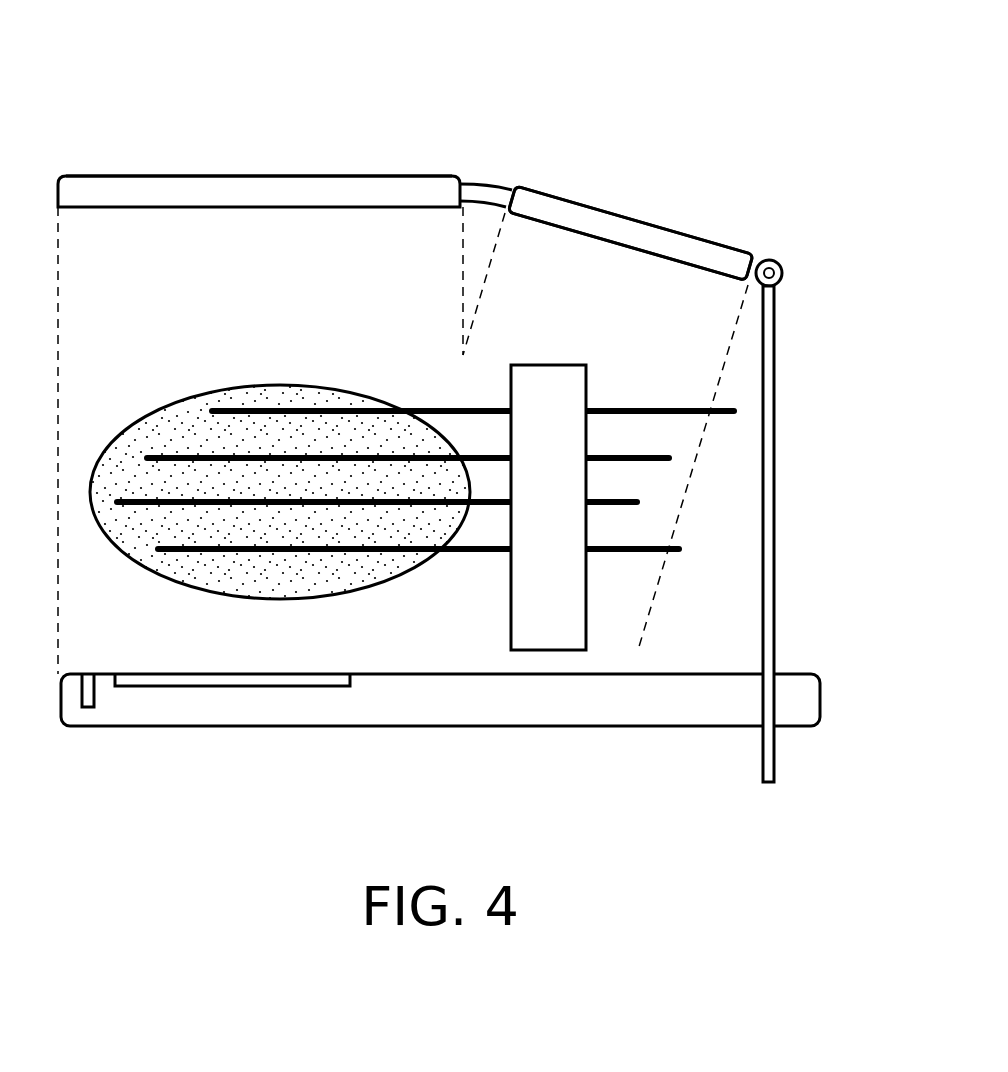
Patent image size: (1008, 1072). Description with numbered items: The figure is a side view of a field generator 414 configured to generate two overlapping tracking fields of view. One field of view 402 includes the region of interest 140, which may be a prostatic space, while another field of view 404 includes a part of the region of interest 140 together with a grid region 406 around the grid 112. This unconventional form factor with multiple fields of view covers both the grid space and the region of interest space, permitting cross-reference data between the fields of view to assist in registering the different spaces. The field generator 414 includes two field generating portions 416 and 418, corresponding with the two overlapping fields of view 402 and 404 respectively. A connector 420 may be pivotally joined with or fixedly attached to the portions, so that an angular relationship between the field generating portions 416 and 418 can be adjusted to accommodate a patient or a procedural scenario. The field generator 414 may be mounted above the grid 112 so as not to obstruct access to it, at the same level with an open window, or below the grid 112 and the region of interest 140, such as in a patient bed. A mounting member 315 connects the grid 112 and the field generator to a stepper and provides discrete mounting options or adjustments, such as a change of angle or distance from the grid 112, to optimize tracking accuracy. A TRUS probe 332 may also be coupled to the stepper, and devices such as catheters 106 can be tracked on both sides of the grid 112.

The catheters 106 is at (134, 503).
The grid 112 is at (543, 650).
The region of interest 140 is at (282, 385).
The mounting member 315 is at (776, 750).
The TRUS probe 332 is at (669, 727).
The field of view 402 is at (305, 240).
The field of view 404 is at (620, 278).
The grid region 406 is at (670, 381).
The field generator 414 is at (398, 68).
The field generating portion 416 is at (412, 176).
The field generating portion 418 is at (556, 192).
The connector 420 is at (478, 185).